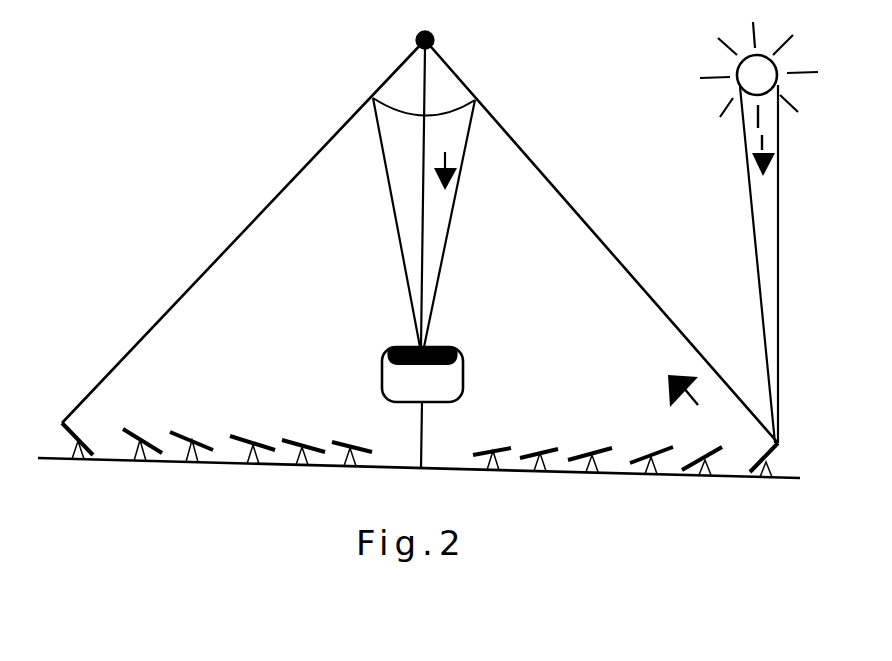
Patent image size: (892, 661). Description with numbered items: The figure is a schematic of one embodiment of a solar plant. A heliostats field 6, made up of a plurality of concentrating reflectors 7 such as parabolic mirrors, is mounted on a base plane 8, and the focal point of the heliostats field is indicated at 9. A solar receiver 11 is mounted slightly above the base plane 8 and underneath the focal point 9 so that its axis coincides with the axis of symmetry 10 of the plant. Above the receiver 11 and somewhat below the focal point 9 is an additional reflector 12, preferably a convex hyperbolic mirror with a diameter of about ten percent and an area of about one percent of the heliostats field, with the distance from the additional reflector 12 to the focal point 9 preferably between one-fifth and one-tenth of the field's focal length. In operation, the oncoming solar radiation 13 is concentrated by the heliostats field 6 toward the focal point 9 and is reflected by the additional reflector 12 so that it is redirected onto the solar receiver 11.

The heliostats field 6 is at (545, 424).
The concentrating reflector 7 is at (137, 440).
The base plane 8 is at (623, 475).
The focal point 9 is at (433, 33).
The axis of symmetry 10 is at (422, 210).
The solar receiver 11 is at (442, 375).
The additional reflector 12 is at (440, 115).
The oncoming solar radiation 13 is at (753, 249).